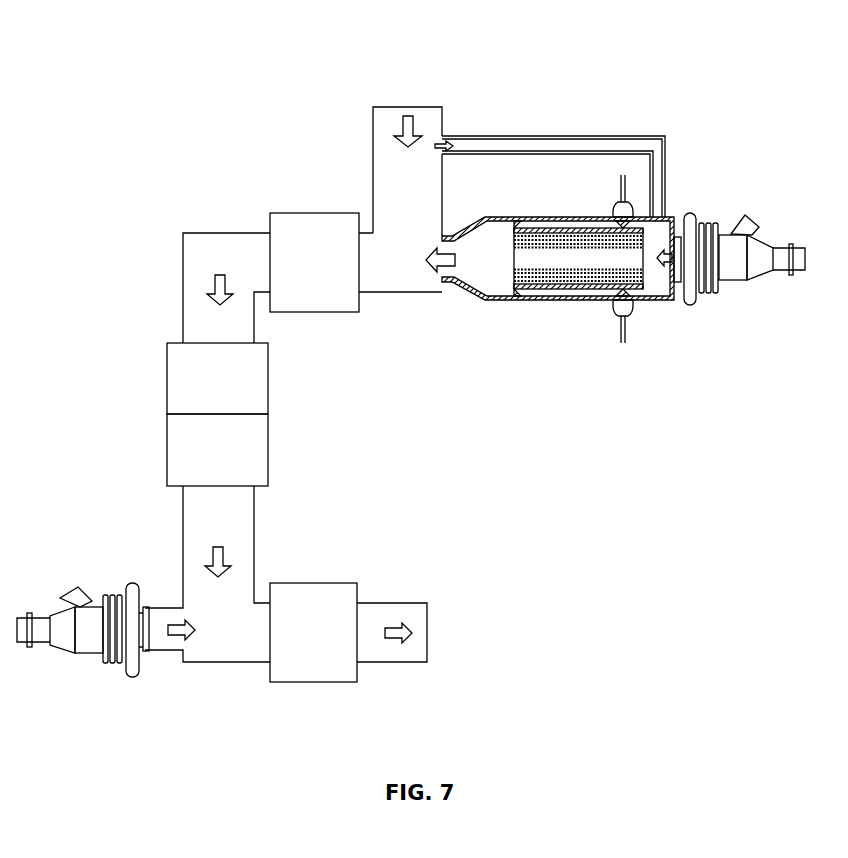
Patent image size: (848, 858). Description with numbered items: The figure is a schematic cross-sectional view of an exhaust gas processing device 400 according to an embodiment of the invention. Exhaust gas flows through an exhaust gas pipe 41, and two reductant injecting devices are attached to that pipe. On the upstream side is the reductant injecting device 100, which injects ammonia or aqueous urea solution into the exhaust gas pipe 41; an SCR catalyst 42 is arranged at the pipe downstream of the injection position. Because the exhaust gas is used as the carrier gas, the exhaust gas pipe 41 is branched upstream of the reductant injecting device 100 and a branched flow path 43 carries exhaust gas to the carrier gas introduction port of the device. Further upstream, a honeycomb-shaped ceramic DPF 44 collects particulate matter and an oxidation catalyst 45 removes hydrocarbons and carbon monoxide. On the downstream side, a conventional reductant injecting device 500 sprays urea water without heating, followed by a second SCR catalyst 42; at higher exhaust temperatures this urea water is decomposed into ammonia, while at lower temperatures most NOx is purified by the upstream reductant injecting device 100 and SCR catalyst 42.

The exhaust gas pipe 41 is at (387, 125).
The SCR catalyst 42 is at (320, 227).
The branched flow path 43 is at (557, 148).
The ceramic DPF 44 is at (248, 383).
The oxidation catalyst 45 is at (248, 452).
The reductant injecting device 100 is at (658, 310).
The exhaust gas processing device 400 is at (429, 739).
The conventional reductant injecting device 500 is at (98, 588).